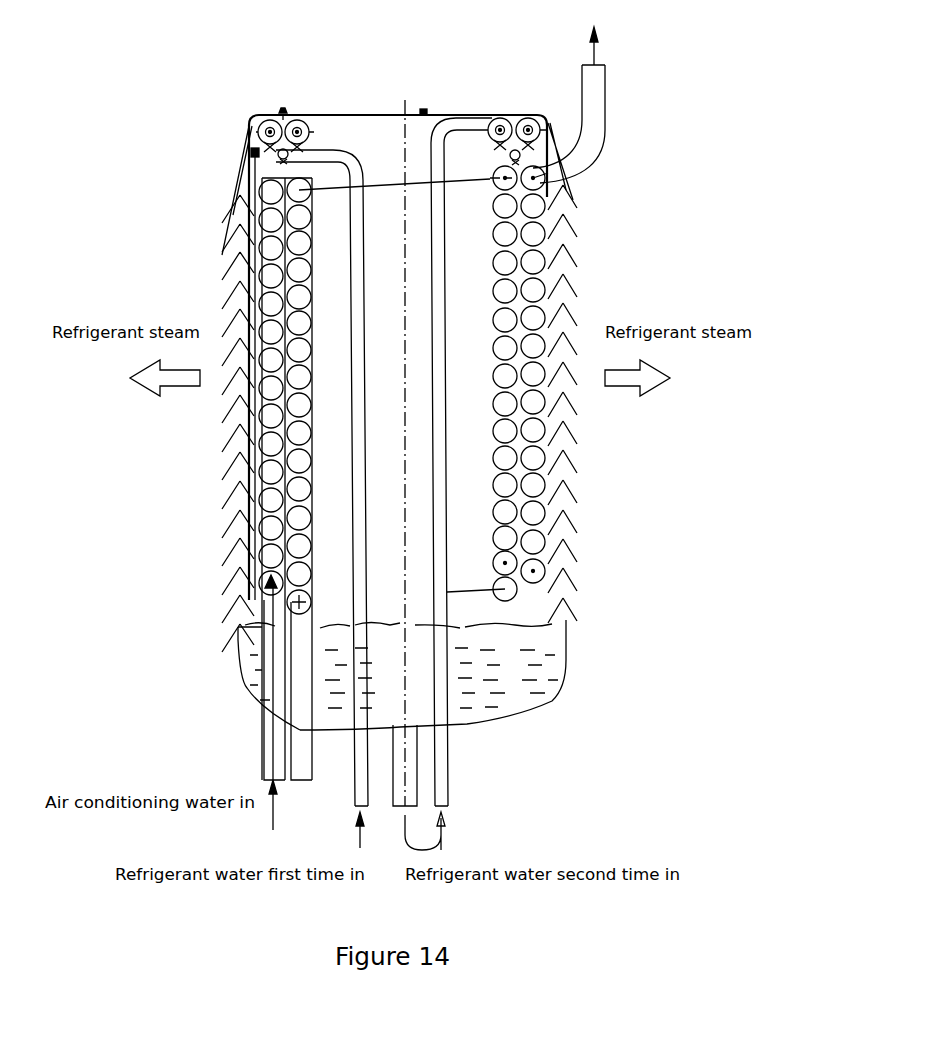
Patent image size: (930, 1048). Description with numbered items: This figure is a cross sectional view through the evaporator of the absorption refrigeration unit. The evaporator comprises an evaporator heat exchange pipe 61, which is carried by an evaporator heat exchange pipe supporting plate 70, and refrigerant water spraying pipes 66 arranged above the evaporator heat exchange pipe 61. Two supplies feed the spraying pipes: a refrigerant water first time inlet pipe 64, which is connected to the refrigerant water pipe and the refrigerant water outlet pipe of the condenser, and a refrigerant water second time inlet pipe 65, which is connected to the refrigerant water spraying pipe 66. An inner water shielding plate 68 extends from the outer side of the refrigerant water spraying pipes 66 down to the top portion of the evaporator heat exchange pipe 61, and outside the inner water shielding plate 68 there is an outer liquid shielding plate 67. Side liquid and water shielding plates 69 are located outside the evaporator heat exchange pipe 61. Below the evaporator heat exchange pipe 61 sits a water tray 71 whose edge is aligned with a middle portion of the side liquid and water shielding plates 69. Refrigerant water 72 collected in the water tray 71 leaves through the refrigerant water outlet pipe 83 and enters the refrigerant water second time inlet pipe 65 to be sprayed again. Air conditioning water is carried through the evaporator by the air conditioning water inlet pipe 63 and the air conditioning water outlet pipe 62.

The evaporator heat exchange pipe 61 is at (270, 472).
The air conditioning water outlet pipe 62 is at (590, 92).
The air conditioning water inlet pipe 63 is at (300, 737).
The refrigerant water first time inlet pipe 64 is at (357, 792).
The refrigerant water second time inlet pipe 65 is at (440, 788).
The refrigerant water spraying pipe 66 is at (258, 132).
The outer liquid shielding plate 67 is at (240, 165).
The inner water shielding plate 68 is at (240, 192).
The side liquid and water shielding plate 69 is at (220, 430).
The evaporator heat exchange pipe supporting plate 70 is at (265, 517).
The water tray 71 is at (240, 655).
The refrigerant water 72 is at (497, 703).
The refrigerant water outlet pipe 83 is at (410, 771).